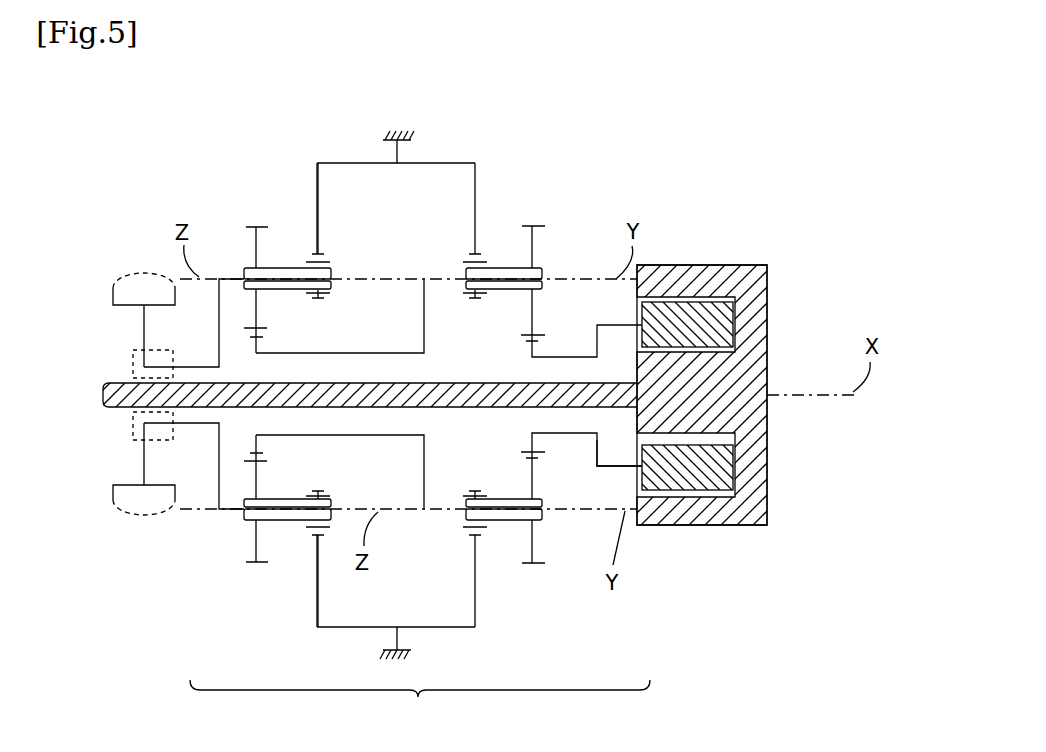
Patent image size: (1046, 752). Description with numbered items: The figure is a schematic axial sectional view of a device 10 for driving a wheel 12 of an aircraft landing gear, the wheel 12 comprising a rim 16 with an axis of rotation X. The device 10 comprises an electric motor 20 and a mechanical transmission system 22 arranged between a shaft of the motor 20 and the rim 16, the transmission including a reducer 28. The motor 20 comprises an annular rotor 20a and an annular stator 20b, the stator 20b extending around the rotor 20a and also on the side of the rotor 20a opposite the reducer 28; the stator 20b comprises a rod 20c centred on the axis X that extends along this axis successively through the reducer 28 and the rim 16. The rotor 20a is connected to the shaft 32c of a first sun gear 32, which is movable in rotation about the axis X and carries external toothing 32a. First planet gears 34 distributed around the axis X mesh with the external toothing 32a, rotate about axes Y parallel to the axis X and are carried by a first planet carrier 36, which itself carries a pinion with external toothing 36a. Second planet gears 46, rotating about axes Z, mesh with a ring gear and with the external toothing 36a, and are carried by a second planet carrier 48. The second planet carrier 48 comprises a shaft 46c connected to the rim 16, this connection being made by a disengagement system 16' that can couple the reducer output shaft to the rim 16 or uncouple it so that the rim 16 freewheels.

The device 10 is at (744, 116).
The wheel 12 is at (127, 525).
The rim 16 is at (109, 395).
The disengagement system 16' is at (107, 382).
The electric motor 20 is at (748, 540).
The rotor 20a is at (720, 472).
The stator 20b is at (756, 358).
The rod 20c is at (416, 398).
The mechanical transmission system 22 is at (420, 703).
The reducer 28 is at (520, 165).
The first sun gear 32 is at (556, 441).
The external toothing 32a is at (527, 452).
The shaft 32c is at (608, 462).
The first planet gears 34 is at (537, 219).
The first planet carrier 36 is at (432, 324).
The external toothing 36a is at (258, 456).
The second planet gears 46 is at (242, 219).
The shaft 46c is at (197, 425).
The second planet carrier 48 is at (214, 518).